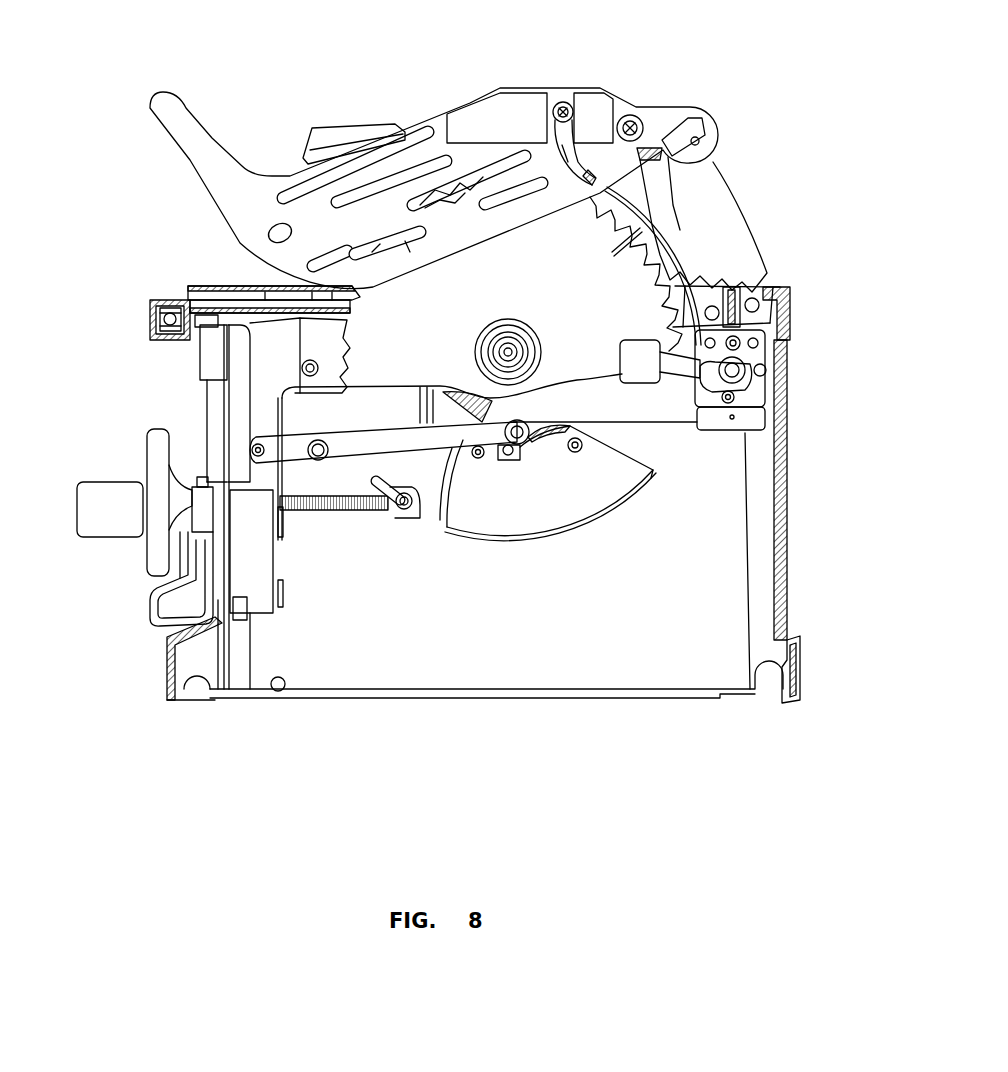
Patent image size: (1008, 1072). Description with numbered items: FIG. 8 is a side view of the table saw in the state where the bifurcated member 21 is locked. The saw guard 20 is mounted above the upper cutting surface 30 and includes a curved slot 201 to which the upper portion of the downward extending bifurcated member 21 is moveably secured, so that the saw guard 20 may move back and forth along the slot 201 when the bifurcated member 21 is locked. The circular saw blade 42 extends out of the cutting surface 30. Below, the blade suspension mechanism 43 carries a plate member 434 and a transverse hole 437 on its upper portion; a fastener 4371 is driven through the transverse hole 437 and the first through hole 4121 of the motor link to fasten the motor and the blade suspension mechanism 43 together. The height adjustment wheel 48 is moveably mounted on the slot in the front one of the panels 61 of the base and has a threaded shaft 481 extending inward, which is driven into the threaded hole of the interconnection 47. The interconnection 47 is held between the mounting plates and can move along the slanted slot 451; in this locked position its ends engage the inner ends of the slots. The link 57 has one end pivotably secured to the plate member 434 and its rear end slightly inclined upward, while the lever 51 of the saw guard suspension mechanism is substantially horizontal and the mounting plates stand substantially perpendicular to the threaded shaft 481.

The saw guard 20 is at (470, 160).
The curved slot 201 is at (575, 140).
The circular saw blade 42 is at (613, 280).
The bifurcated member 21 is at (760, 318).
The blade suspension mechanism 43 is at (157, 305).
The upper cutting surface 30 is at (286, 342).
The fastener 4371 is at (179, 360).
The first through hole 4121 is at (302, 368).
The transverse hole 437 is at (305, 390).
The plate member 434 is at (290, 453).
The height adjustment wheel 48 is at (110, 517).
The threaded shaft 481 is at (330, 508).
The slanted slot 451 is at (378, 505).
The interconnection 47 is at (403, 512).
The link 57 is at (447, 527).
The lever 51 is at (707, 368).
The panels 61 is at (643, 677).